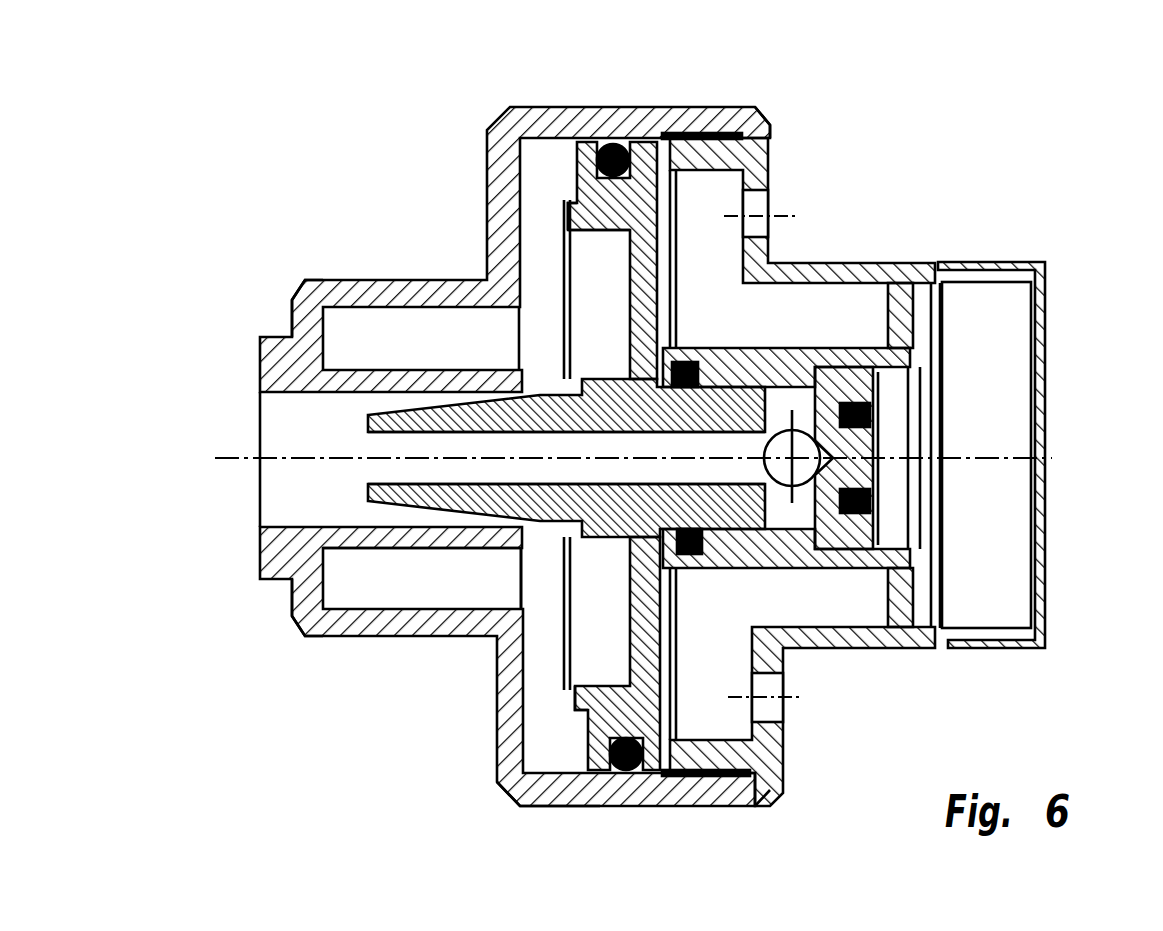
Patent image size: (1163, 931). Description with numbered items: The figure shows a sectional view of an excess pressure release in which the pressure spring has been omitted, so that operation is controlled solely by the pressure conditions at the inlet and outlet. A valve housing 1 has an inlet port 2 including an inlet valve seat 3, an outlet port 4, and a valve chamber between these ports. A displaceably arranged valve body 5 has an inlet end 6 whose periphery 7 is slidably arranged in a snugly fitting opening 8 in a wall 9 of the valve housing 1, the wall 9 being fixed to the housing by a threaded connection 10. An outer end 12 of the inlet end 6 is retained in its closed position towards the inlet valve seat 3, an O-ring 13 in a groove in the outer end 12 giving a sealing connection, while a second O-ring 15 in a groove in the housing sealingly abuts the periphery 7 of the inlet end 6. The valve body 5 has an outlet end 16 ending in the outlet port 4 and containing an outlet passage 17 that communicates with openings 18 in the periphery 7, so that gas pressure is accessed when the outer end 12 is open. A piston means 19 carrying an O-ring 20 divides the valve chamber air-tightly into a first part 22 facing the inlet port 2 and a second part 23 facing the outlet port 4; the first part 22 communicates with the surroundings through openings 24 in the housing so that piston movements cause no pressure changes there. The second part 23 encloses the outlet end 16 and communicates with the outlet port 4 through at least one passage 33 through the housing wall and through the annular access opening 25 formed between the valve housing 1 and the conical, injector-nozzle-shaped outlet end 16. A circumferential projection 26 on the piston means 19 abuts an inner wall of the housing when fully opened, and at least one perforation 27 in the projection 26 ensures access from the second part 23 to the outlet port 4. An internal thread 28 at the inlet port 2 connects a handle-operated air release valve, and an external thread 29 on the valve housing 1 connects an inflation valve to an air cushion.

The valve housing 1 is at (468, 284).
The inlet port 2 is at (1020, 300).
The inlet valve seat 3 is at (870, 415).
The outlet port 4 is at (262, 392).
The valve body 5 is at (570, 705).
The inlet end 6 is at (768, 392).
The periphery 7 is at (895, 350).
The snugly fitting opening 8 is at (757, 570).
The wall 9 is at (775, 128).
The threaded connection 10 is at (722, 133).
The outer end 12 is at (862, 463).
The O-ring 13 is at (833, 508).
The second O-ring 15 is at (690, 347).
The outlet end 16 is at (362, 497).
The outlet passage 17 is at (375, 437).
The openings 18 is at (820, 560).
The piston means 19 is at (575, 145).
The O-ring 20 is at (606, 145).
The first part of the valve chamber 22 is at (666, 158).
The second part of the valve chamber 23 is at (527, 158).
The openings 24 is at (776, 213).
The annular access opening 25 is at (440, 520).
The circumferential projection 26 is at (508, 795).
The perforation 27 is at (556, 218).
The internal thread 28 is at (1000, 637).
The external thread 29 is at (337, 282).
The passages 33 is at (495, 530).